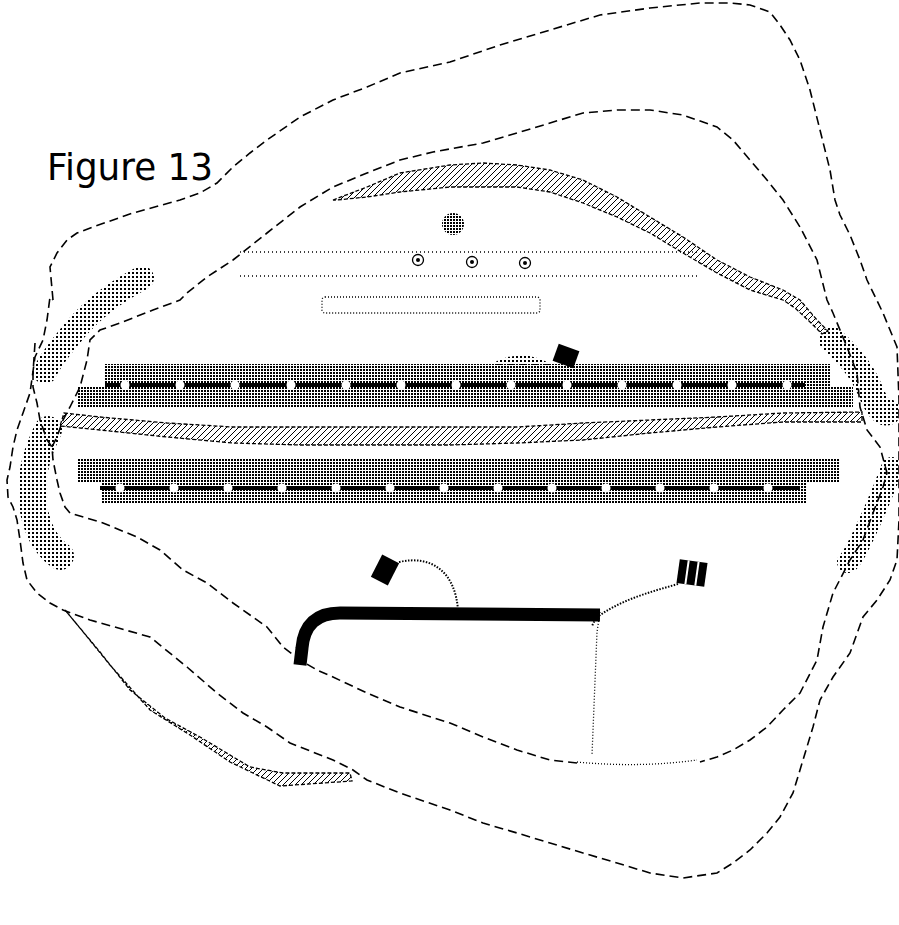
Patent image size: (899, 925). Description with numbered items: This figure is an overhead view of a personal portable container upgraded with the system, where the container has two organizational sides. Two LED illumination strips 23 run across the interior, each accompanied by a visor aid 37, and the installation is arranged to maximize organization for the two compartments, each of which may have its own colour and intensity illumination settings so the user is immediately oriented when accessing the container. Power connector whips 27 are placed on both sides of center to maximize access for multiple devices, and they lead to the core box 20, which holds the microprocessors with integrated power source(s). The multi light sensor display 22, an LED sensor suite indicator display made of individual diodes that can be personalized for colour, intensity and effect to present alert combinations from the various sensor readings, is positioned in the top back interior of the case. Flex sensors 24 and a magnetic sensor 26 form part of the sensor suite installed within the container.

The core box 20 is at (516, 701).
The multi light sensor display 22 is at (549, 262).
The LED illumination strip 23 is at (268, 368).
The flex sensor 24 is at (111, 318).
The magnetic sensor 26 is at (440, 224).
The power connector whips 27 is at (592, 353).
The visor aid 37 is at (394, 409).